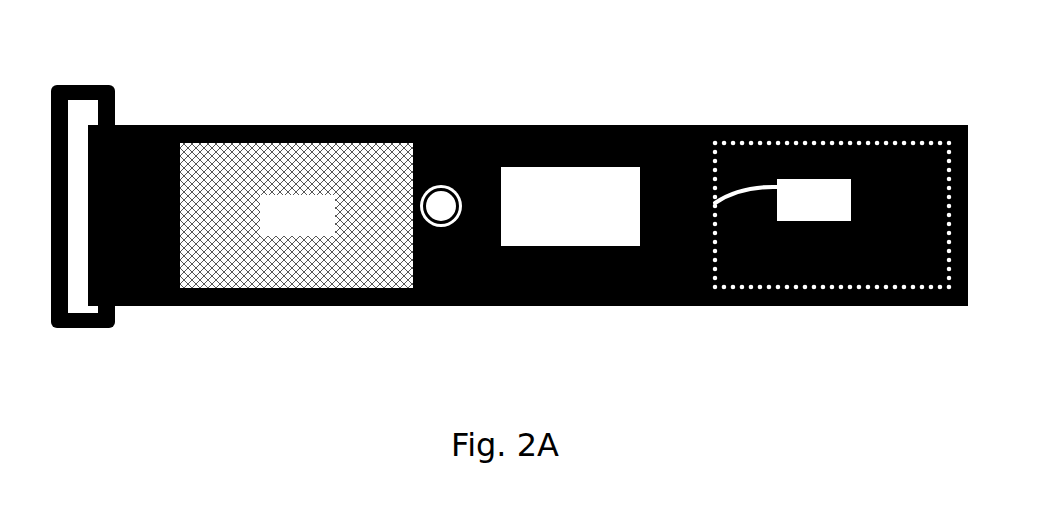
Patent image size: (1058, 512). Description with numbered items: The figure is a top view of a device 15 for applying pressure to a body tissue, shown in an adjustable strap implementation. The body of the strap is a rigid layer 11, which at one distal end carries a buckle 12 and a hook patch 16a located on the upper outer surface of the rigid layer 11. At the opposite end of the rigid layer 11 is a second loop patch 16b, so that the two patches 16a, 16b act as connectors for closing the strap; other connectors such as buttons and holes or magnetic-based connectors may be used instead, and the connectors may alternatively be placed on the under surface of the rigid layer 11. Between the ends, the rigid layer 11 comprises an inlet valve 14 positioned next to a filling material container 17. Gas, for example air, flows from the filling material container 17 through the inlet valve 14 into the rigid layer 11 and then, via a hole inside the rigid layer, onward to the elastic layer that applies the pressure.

The rigid layer 11 is at (922, 297).
The buckle 12 is at (80, 77).
The inlet valve 14 is at (441, 206).
The device 15 is at (738, 96).
The hook patch 16a is at (296, 215).
The loop patch 16b is at (783, 200).
The filling material container 17 is at (570, 206).